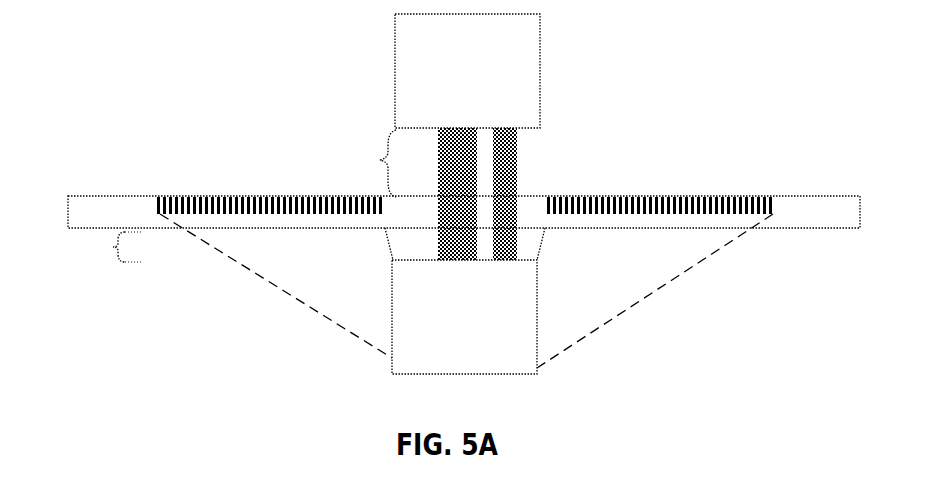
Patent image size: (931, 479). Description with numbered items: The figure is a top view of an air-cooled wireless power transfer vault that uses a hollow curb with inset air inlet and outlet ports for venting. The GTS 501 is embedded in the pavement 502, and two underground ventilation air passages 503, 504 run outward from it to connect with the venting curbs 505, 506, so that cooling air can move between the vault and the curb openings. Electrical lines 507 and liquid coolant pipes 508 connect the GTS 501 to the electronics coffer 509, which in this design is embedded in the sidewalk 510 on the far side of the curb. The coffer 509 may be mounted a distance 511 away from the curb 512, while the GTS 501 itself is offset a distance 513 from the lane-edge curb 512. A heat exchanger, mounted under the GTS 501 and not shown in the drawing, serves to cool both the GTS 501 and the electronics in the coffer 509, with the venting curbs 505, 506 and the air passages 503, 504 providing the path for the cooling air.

The GTS 501 is at (464, 317).
The pavement 502 is at (795, 345).
The underground ventilation air passage 503 is at (338, 312).
The underground ventilation air passage 504 is at (597, 307).
The venting curb 505 is at (271, 194).
The venting curb 506 is at (660, 193).
The electrical lines 507 is at (521, 149).
The liquid coolant pipes 508 is at (473, 181).
The electronics coffer 509 is at (467, 71).
The sidewalk 510 is at (795, 88).
The distance 511 is at (366, 163).
The curb 512 is at (442, 228).
The distance 513 is at (107, 247).